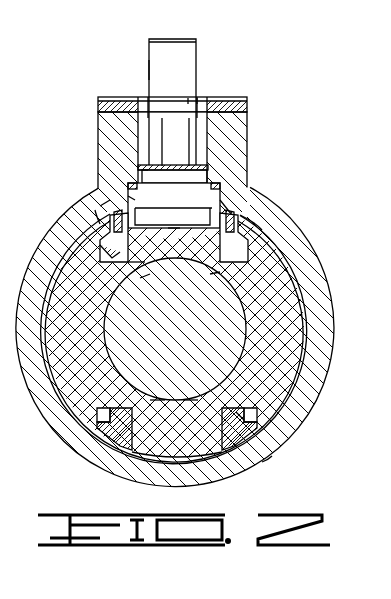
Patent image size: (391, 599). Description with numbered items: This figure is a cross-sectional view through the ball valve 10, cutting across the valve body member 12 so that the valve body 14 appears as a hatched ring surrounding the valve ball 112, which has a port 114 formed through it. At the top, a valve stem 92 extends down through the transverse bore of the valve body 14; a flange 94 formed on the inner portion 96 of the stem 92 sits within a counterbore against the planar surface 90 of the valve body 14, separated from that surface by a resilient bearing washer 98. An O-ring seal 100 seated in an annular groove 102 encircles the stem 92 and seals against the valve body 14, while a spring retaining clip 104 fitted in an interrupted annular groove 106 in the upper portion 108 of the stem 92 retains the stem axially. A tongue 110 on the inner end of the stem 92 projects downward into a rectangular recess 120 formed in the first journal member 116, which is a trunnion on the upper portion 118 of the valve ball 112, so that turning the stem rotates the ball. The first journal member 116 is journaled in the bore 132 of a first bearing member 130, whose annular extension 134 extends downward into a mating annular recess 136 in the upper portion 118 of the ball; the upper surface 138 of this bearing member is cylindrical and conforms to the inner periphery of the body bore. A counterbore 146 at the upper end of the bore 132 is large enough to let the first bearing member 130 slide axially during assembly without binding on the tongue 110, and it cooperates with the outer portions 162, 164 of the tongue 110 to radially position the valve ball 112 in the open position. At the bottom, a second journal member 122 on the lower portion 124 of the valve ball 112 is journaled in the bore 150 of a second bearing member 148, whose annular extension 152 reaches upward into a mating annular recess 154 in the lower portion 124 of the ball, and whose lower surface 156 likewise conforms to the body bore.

The valve 10 is at (322, 162).
The valve body member 12 is at (250, 115).
The valve body 14 is at (300, 245).
The planar surface 90 is at (128, 198).
The valve stem 92 is at (188, 50).
The flange 94 is at (145, 182).
The inner portion of the stem 96 is at (212, 188).
The bearing washer 98 is at (210, 168).
The O-ring seal 100 is at (247, 150).
The annular groove 102 is at (172, 142).
The spring retaining clip 104 is at (198, 98).
The interrupted annular groove 106 is at (190, 98).
The upper portion of the stem 108 is at (150, 57).
The tongue 110 is at (172, 228).
The valve ball 112 is at (90, 358).
The port 114 is at (158, 342).
The first journal member 116 is at (140, 278).
The upper portion of the valve ball 118 is at (217, 272).
The rectangular recess 120 is at (170, 225).
The second journal member 122 is at (158, 400).
The lower portion of the valve ball 124 is at (190, 400).
The first bearing member 130 is at (125, 238).
The bore 132 is at (155, 262).
The annular extension 134 is at (145, 262).
The mating annular recess 136 is at (108, 258).
The upper surface 138 is at (222, 205).
The counterbore 146 is at (105, 206).
The second bearing member 148 is at (118, 437).
The bore 150 is at (222, 445).
The annular extension 152 is at (232, 405).
The mating annular recess 154 is at (238, 415).
The lower surface 156 is at (270, 458).
The outer portion of the tongue 162 is at (95, 224).
The outer portion of the tongue 164 is at (262, 230).